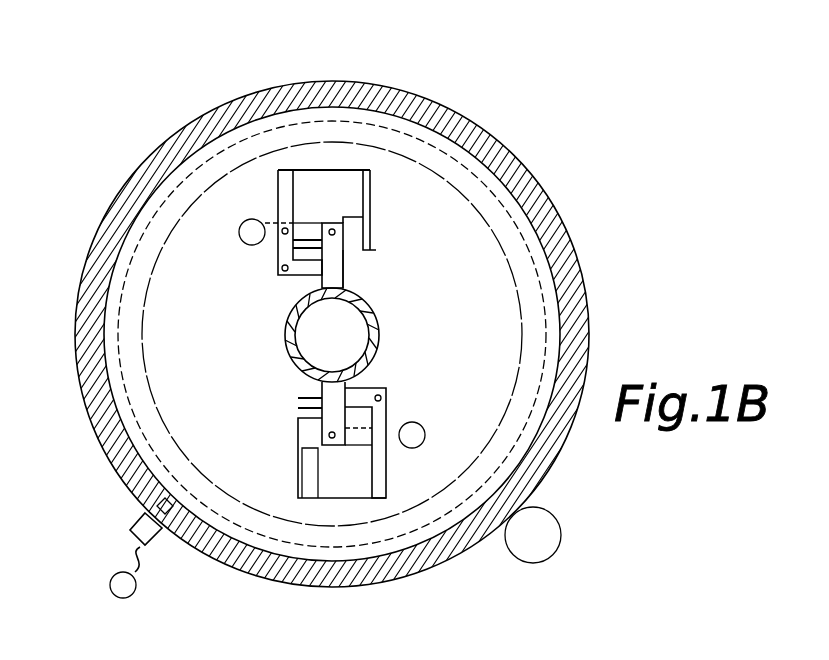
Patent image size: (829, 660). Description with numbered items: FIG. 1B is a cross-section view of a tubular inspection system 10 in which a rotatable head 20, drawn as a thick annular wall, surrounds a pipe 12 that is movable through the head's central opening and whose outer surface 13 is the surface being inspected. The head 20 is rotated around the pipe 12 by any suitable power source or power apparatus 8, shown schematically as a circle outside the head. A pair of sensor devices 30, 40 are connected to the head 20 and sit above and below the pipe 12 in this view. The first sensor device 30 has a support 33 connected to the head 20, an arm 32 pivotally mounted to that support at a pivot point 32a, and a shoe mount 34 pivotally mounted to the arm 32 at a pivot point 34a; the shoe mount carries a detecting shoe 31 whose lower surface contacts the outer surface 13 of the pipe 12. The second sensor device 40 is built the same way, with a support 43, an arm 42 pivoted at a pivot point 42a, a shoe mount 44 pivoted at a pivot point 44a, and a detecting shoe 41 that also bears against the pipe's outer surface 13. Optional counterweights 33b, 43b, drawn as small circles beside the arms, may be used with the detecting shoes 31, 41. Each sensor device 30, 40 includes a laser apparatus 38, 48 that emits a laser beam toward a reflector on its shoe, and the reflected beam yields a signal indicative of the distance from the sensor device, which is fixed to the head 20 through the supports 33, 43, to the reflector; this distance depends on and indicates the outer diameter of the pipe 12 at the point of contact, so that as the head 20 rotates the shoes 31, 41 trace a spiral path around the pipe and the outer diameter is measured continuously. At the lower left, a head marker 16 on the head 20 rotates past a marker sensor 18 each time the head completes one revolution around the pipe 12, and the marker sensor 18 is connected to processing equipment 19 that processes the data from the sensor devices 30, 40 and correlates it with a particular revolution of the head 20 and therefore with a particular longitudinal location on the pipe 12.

The power source or power apparatus 8 is at (547, 535).
The system 10 is at (586, 266).
The pipe 12 is at (380, 333).
The outer surface 13 is at (286, 339).
The head marker 16 is at (165, 503).
The marker sensor 18 is at (128, 530).
The processing equipment 19 is at (118, 586).
The rotatable head 20 is at (245, 107).
The sensor device 30 is at (352, 166).
The detecting shoe 31 is at (346, 276).
The arm 32 is at (276, 244).
The pivot point 32a is at (286, 228).
The support 33 is at (288, 171).
The counterweight 33b is at (239, 229).
The shoe mount 34 is at (346, 262).
The pivot point 34a is at (345, 226).
The laser apparatus 38 is at (370, 192).
The sensor device 40 is at (310, 499).
The detecting shoe 41 is at (328, 387).
The arm 42 is at (390, 443).
The pivot point 42a is at (388, 407).
The support 43 is at (377, 492).
The counterweight 43b is at (421, 431).
The shoe mount 44 is at (298, 408).
The pivot point 44a is at (328, 436).
The laser apparatus 48 is at (310, 473).